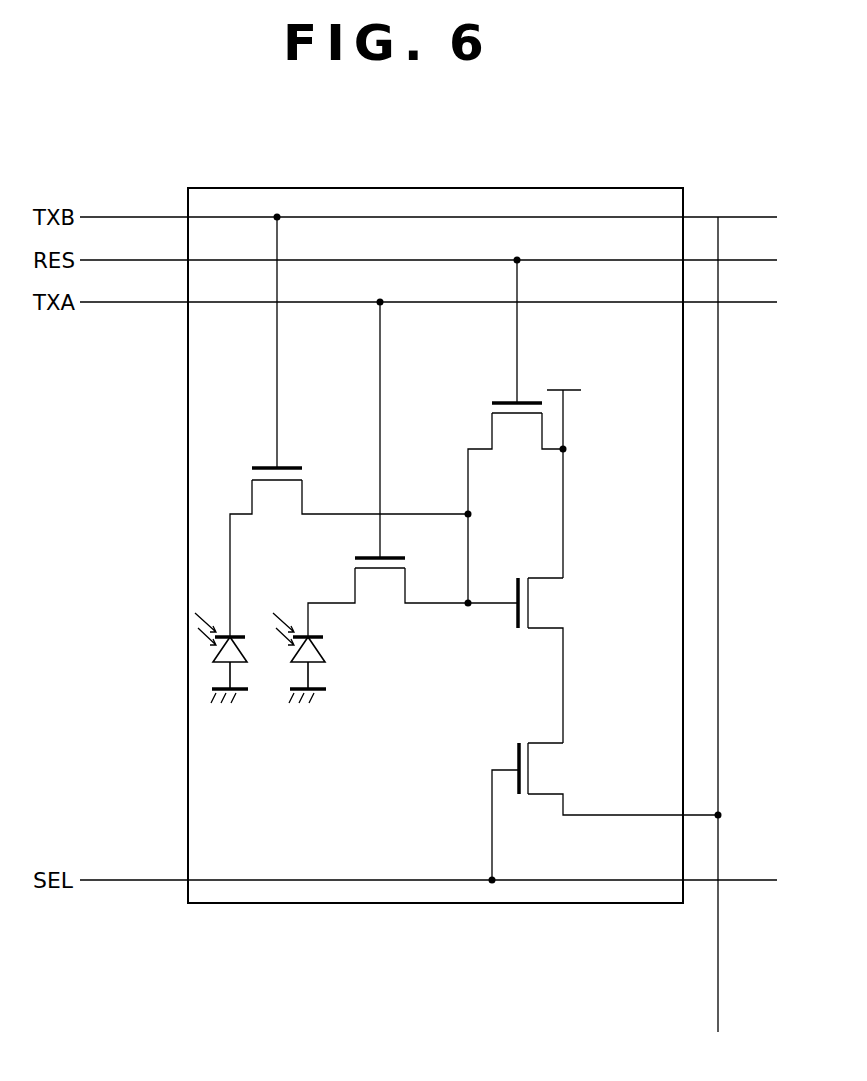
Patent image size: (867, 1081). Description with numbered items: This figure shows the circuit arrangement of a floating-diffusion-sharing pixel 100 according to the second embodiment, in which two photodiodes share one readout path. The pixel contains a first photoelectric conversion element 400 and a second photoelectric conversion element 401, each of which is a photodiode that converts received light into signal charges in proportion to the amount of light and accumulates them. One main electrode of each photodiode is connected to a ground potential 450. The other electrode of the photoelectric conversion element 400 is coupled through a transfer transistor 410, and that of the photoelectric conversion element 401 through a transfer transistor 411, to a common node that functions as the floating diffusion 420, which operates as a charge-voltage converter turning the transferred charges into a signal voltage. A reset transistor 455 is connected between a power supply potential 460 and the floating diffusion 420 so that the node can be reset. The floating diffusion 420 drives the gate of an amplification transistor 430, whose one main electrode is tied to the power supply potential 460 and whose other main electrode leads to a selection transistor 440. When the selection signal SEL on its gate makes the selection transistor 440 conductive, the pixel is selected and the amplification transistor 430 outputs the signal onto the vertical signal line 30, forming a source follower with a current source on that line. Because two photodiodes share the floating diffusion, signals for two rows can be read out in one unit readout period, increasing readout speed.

The vertical signal line 30 is at (718, 963).
The pixel 100 is at (643, 187).
The photoelectric conversion element 400 is at (325, 649).
The photoelectric conversion element 401 is at (235, 636).
The transfer transistor 410 is at (380, 593).
The transfer transistor 411 is at (277, 505).
The floating diffusion 420 is at (468, 610).
The amplification transistor 430 is at (560, 603).
The selection transistor 440 is at (527, 733).
The ground potential 450 is at (325, 700).
The reset transistor 455 is at (491, 413).
The power supply potential 460 is at (585, 390).